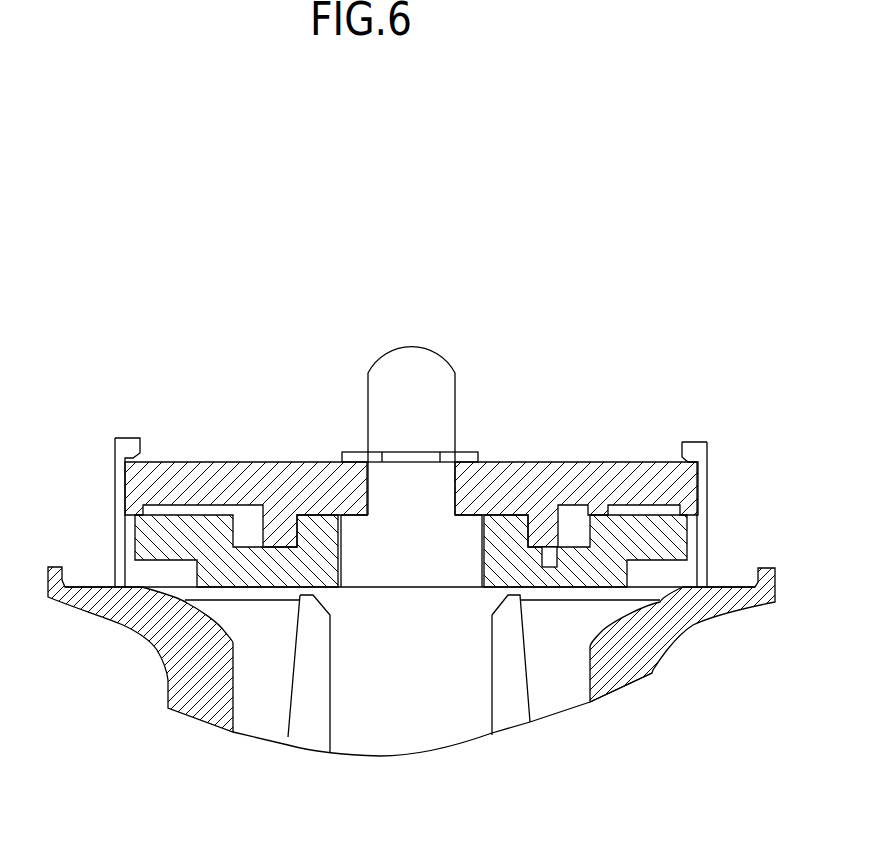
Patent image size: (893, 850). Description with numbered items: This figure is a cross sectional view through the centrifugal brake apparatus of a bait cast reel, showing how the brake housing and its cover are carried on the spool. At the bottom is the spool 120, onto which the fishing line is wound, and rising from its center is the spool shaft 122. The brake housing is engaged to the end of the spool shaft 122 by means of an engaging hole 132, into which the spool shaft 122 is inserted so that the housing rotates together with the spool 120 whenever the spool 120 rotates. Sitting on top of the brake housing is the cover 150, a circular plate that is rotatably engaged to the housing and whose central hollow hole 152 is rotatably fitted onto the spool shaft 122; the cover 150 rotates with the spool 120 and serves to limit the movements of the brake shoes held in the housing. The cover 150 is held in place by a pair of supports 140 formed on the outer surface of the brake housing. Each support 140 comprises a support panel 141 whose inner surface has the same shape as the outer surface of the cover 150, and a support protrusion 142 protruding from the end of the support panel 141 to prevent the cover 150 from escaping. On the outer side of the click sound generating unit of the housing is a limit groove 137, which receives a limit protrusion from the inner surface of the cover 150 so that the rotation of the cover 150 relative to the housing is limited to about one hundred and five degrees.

The spool 120 is at (158, 644).
The spool shaft 122 is at (427, 376).
The engaging hole 132 is at (411, 555).
The limit groove 137 is at (547, 573).
The support 140 is at (463, 487).
The support panel 141 is at (741, 487).
The support protrusion 142 is at (673, 452).
The cover 150 is at (607, 461).
The hollow hole 152 is at (465, 488).